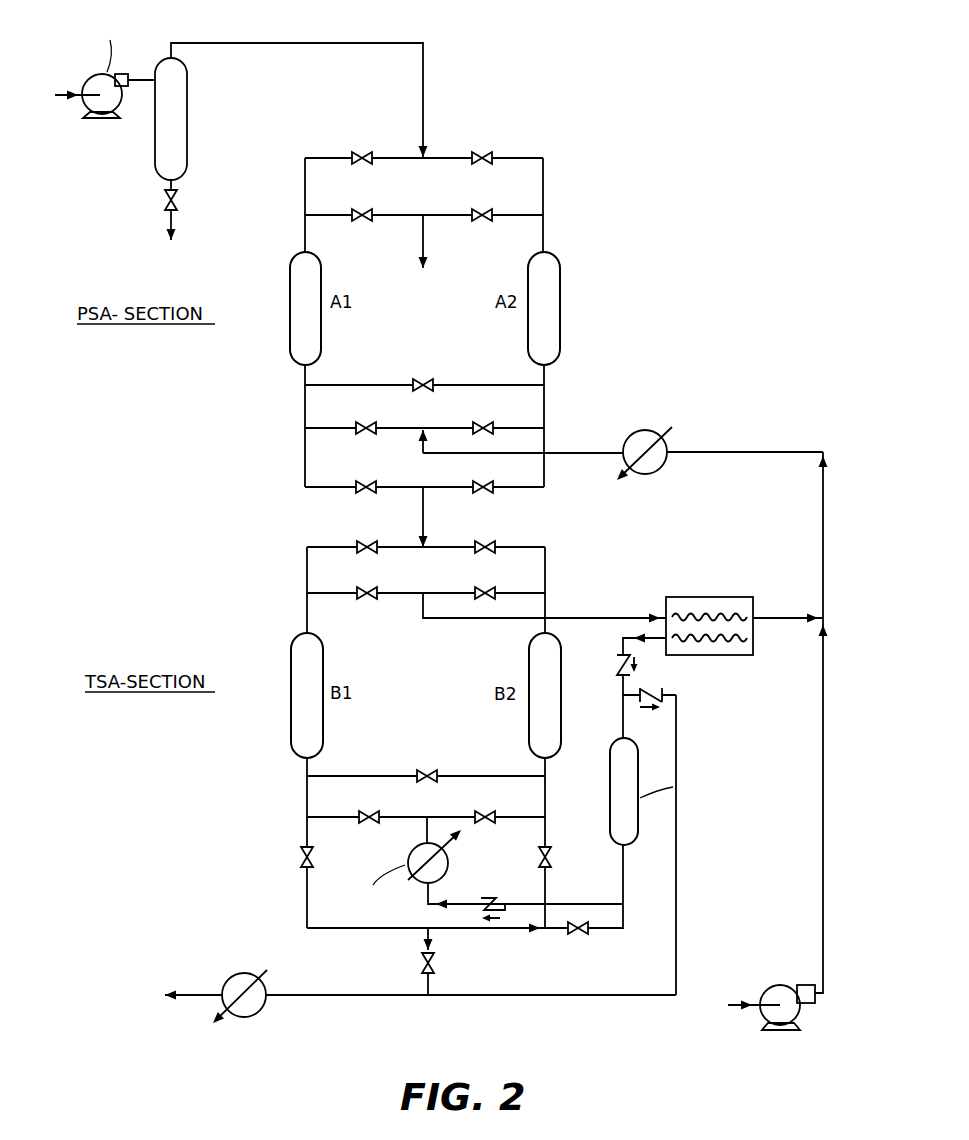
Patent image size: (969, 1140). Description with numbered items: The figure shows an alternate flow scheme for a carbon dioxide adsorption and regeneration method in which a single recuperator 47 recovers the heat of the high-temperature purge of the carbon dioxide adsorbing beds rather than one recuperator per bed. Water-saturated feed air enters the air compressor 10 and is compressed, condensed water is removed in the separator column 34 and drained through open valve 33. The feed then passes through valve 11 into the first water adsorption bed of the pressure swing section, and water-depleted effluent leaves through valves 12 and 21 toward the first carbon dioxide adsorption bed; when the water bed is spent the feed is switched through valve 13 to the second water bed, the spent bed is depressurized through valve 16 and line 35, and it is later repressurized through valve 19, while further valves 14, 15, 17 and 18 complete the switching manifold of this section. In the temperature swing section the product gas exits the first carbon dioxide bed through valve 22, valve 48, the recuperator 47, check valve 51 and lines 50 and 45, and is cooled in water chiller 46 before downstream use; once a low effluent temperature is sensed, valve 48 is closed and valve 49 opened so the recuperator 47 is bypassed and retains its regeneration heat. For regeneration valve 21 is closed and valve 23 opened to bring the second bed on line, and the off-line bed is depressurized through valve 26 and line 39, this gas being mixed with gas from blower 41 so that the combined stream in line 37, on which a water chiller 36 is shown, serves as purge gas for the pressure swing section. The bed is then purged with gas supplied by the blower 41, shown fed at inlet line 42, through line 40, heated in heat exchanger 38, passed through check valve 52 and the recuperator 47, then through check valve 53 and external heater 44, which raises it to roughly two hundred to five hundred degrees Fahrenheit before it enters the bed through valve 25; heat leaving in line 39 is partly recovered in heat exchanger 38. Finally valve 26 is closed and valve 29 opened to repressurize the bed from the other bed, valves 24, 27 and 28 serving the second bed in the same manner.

The air compressor 10 is at (95, 122).
The valve 11 is at (357, 152).
The valve 12 is at (366, 480).
The valve 13 is at (483, 150).
The valve 14 is at (483, 480).
The valve 15 is at (366, 420).
The valve 16 is at (360, 208).
The valve 17 is at (483, 420).
The valve 18 is at (481, 208).
The valve 19 is at (420, 378).
The valve 21 is at (367, 541).
The valve 22 is at (327, 848).
The valve 23 is at (487, 541).
The valve 24 is at (565, 848).
The valve 25 is at (370, 808).
The valve 26 is at (366, 588).
The valve 27 is at (488, 808).
The valve 28 is at (485, 588).
The valve 29 is at (422, 767).
The valve 33 is at (165, 200).
The adsorbent separator column 34 is at (190, 168).
The line 35 is at (437, 232).
The water chiller 36 is at (667, 462).
The line 37 is at (761, 455).
The heat exchanger 38 is at (715, 657).
The line 39 is at (613, 616).
The line 40 is at (822, 858).
The blower 41 is at (763, 988).
The blower inlet line 42 is at (738, 1003).
The external heater 44 is at (448, 860).
The line 45 is at (415, 996).
The water chiller 46 is at (238, 972).
The recuperator 47 is at (608, 783).
The valve 48 is at (577, 934).
The valve 49 is at (420, 962).
The line 50 is at (680, 863).
The check valve 51 is at (650, 692).
The check valve 52 is at (622, 672).
The check valve 53 is at (493, 897).